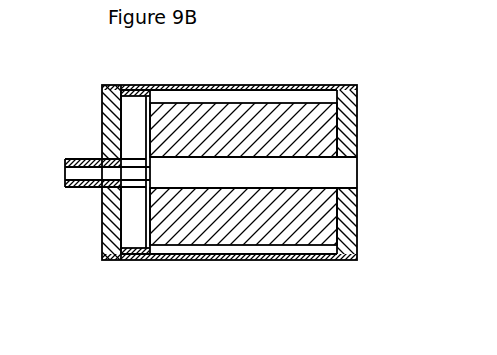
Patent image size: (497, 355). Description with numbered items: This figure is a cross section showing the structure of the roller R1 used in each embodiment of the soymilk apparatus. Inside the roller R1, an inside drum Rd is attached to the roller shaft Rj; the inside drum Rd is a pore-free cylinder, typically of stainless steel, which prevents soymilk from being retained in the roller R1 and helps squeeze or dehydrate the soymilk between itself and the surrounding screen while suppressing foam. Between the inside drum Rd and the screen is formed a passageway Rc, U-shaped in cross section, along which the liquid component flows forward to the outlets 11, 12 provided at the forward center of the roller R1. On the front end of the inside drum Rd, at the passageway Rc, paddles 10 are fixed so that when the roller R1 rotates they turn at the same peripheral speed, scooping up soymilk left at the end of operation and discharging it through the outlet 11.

The paddle 10 is at (151, 92).
The outlet 11 is at (248, 177).
The outlet 12 is at (64, 172).
The roller R1 is at (229, 84).
The inside drum Rd is at (275, 110).
The roller shaft Rj is at (320, 176).
The passageway Rc is at (198, 245).